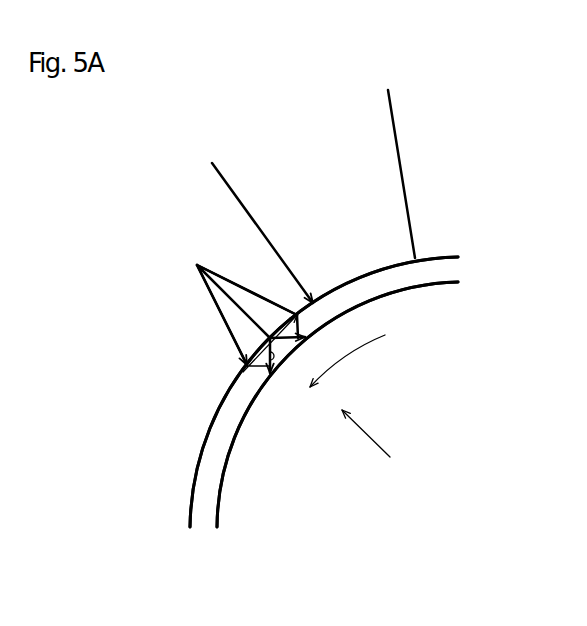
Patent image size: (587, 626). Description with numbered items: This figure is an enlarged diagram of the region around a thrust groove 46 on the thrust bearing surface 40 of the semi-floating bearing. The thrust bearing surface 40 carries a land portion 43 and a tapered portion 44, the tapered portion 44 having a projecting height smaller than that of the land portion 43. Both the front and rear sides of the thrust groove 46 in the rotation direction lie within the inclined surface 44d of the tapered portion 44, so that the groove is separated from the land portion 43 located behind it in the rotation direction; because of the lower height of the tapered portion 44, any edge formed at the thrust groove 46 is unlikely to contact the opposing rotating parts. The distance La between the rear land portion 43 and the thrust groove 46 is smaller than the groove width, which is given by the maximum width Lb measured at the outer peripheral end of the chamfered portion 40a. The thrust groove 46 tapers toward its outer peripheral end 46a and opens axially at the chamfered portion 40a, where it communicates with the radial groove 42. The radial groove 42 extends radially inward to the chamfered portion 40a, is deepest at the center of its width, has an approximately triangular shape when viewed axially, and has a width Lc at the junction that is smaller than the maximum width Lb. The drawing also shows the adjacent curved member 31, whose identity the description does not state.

The thrust bearing surface 40 is at (190, 223).
The chamfered portion 40a is at (450, 270).
The inner ring 31 is at (447, 285).
The land portion 43 is at (297, 173).
The tapered portion 44 is at (192, 218).
The inclined surface 44d is at (238, 256).
The thrust groove 46 is at (230, 316).
The outer peripheral end 46a is at (195, 264).
The radial groove 42 is at (242, 373).
The distance La is at (304, 304).
The maximum width Lb is at (252, 362).
The width Lc is at (277, 362).